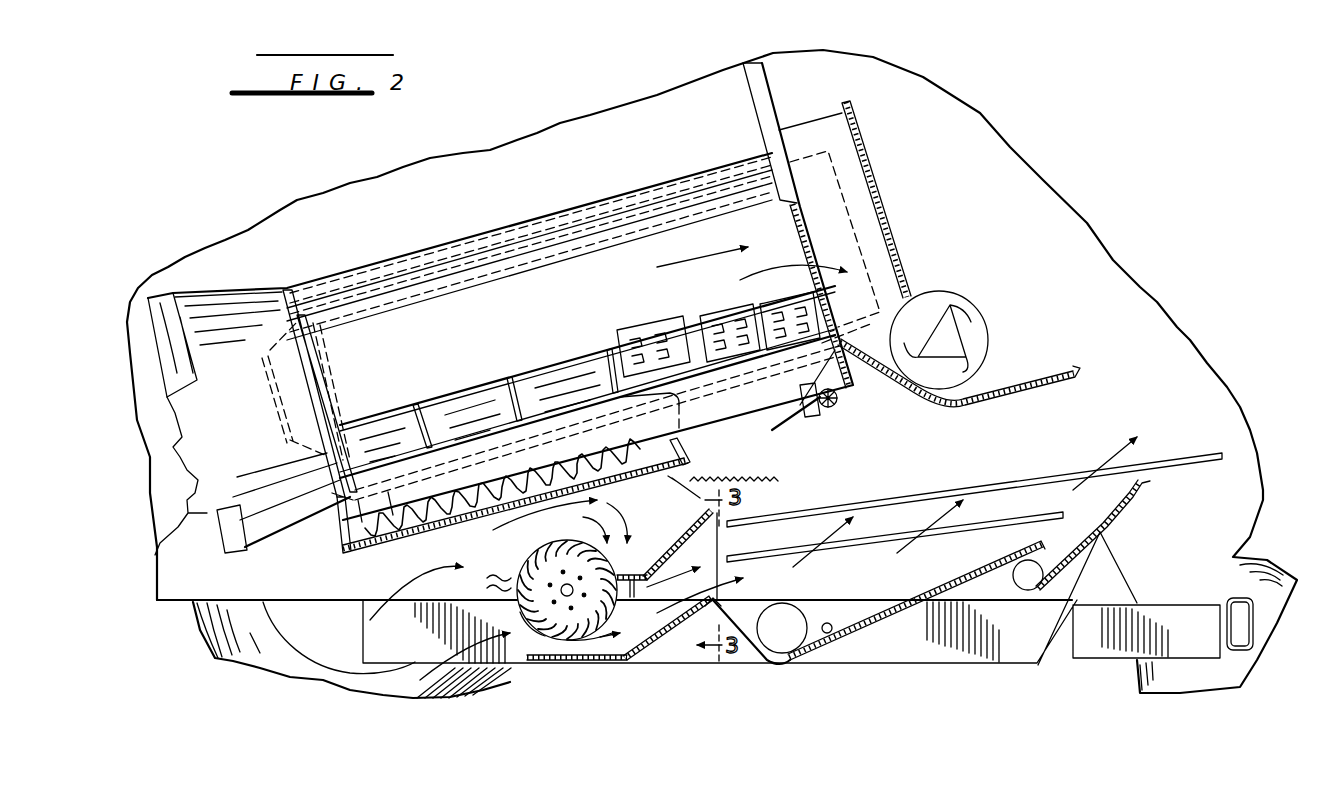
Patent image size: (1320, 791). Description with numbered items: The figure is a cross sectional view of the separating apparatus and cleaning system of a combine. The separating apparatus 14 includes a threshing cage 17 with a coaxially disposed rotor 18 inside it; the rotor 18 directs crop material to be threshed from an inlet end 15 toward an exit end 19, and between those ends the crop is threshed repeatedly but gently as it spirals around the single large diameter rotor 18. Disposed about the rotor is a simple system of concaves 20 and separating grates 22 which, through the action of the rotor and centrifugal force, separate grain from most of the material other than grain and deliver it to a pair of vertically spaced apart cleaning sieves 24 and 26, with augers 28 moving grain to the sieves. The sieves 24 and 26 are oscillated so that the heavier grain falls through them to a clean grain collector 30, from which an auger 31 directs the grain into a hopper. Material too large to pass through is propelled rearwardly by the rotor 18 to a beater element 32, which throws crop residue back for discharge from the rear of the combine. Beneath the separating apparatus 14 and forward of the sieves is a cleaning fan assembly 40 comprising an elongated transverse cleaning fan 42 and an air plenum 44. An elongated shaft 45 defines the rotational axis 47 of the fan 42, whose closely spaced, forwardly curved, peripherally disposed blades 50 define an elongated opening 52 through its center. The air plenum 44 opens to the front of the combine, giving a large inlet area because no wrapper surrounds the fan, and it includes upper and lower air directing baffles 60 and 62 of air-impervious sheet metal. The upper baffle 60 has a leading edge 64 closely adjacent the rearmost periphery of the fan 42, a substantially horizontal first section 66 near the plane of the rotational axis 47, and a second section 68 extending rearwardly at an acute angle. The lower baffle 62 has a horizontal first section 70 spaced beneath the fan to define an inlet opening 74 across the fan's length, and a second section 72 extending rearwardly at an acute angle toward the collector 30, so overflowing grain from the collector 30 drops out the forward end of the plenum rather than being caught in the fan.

The separating apparatus 14 is at (647, 183).
The inlet end 15 is at (160, 537).
The threshing cage 17 is at (567, 213).
The rotor 18 is at (443, 253).
The exit end 19 is at (797, 200).
The concaves 20 is at (460, 397).
The separating grates 22 is at (760, 310).
The cleaning sieve 24 is at (1017, 477).
The cleaning sieve 26 is at (1020, 513).
The augers 28 is at (558, 465).
The clean grain collector 30 is at (833, 632).
The auger 31 is at (772, 639).
The beater element 32 is at (982, 325).
The cleaning fan assembly 40 is at (530, 640).
The cleaning fan 42 is at (520, 551).
The air plenum 44 is at (672, 645).
The shaft 45 is at (557, 573).
The rotational axis 47 is at (527, 620).
The blades 50 is at (510, 583).
The elongated opening 52 is at (572, 615).
The upper air directing baffle 60 is at (687, 530).
The lower air directing baffle 62 is at (668, 623).
The leading edge 64 is at (613, 580).
The first section 66 is at (632, 598).
The second section 68 is at (718, 532).
The first section 70 is at (618, 667).
The second section 72 is at (727, 612).
The inlet opening 74 is at (553, 655).